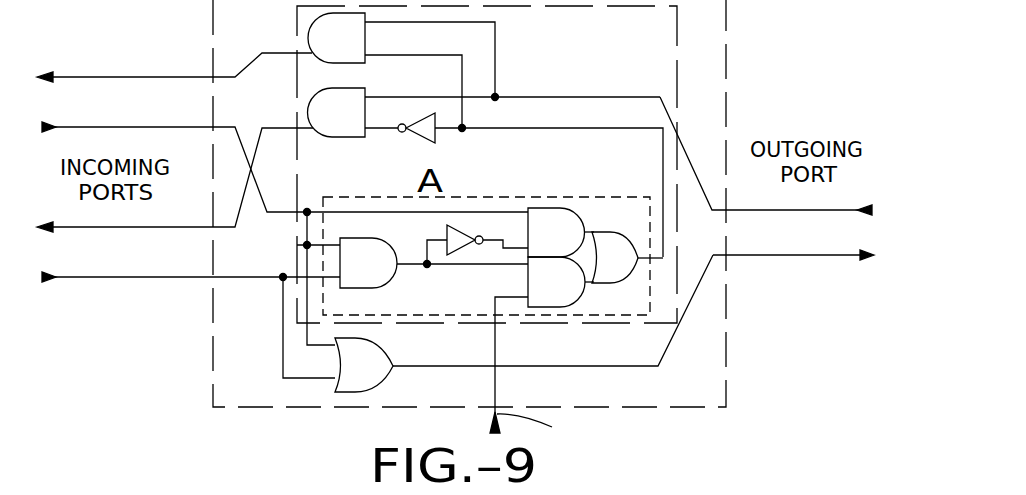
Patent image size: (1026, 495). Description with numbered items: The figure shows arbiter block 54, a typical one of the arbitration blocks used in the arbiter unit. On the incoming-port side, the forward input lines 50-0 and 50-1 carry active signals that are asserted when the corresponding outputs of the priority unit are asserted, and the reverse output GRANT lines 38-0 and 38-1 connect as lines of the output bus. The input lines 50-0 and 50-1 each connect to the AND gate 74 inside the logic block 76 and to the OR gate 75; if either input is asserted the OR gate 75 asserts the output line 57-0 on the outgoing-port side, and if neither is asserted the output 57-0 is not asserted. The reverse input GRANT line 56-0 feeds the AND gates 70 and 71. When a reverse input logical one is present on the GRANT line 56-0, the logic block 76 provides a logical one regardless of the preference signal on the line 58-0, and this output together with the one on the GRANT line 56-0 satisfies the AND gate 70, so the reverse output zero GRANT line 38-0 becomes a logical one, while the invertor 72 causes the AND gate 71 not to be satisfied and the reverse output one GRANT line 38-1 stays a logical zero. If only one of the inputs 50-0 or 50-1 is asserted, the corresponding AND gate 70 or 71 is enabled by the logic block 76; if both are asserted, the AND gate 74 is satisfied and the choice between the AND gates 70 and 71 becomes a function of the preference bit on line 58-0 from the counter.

The reverse output zero GRANT line 38-0 is at (58, 77).
The forward input line 50-0 is at (62, 127).
The reverse output one GRANT line 38-1 is at (72, 227).
The forward input line 50-1 is at (65, 278).
The arbiter block 54 is at (727, 67).
The GRANT line 56-0 is at (853, 212).
The output line 57-0 is at (850, 262).
The preference bit line 58-0 is at (487, 415).
The AND gate 70 is at (313, 27).
The AND gate 71 is at (330, 137).
The invertor 72 is at (432, 136).
The AND gate 74 is at (353, 240).
The OR gate 75 is at (372, 353).
The logic block 76 is at (553, 197).